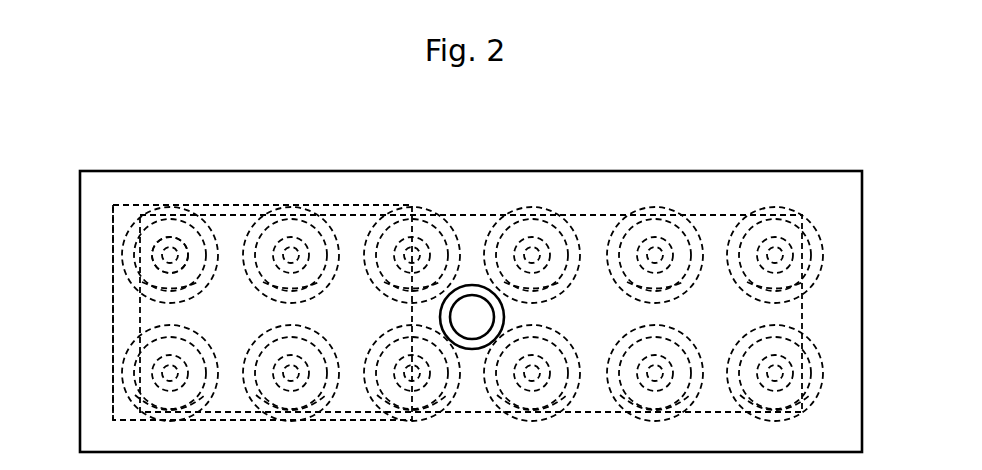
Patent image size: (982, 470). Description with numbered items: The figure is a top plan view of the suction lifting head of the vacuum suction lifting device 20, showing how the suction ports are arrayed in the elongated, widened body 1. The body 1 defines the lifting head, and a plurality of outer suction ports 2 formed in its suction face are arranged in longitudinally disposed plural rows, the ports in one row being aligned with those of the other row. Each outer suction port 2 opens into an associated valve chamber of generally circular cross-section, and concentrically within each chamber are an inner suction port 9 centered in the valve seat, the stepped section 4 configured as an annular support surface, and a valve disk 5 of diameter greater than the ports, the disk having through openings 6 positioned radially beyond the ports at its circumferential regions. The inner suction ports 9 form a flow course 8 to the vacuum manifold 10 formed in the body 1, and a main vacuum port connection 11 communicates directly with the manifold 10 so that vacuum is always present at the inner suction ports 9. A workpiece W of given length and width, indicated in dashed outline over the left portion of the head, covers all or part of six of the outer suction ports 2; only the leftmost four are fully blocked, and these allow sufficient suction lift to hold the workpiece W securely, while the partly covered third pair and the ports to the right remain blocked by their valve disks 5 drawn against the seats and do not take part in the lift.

The body 1 is at (789, 171).
The outer suction port 2 is at (182, 257).
The stepped section 4 is at (199, 220).
The valve disk 5 is at (127, 230).
The through openings 6 is at (158, 222).
The flow course 8 is at (160, 257).
The inner suction port 9 is at (185, 257).
The vacuum manifold 10 is at (370, 215).
The main vacuum port connection 11 is at (480, 307).
The vacuum suction lifting device 20 is at (689, 142).
The workpiece W is at (317, 205).